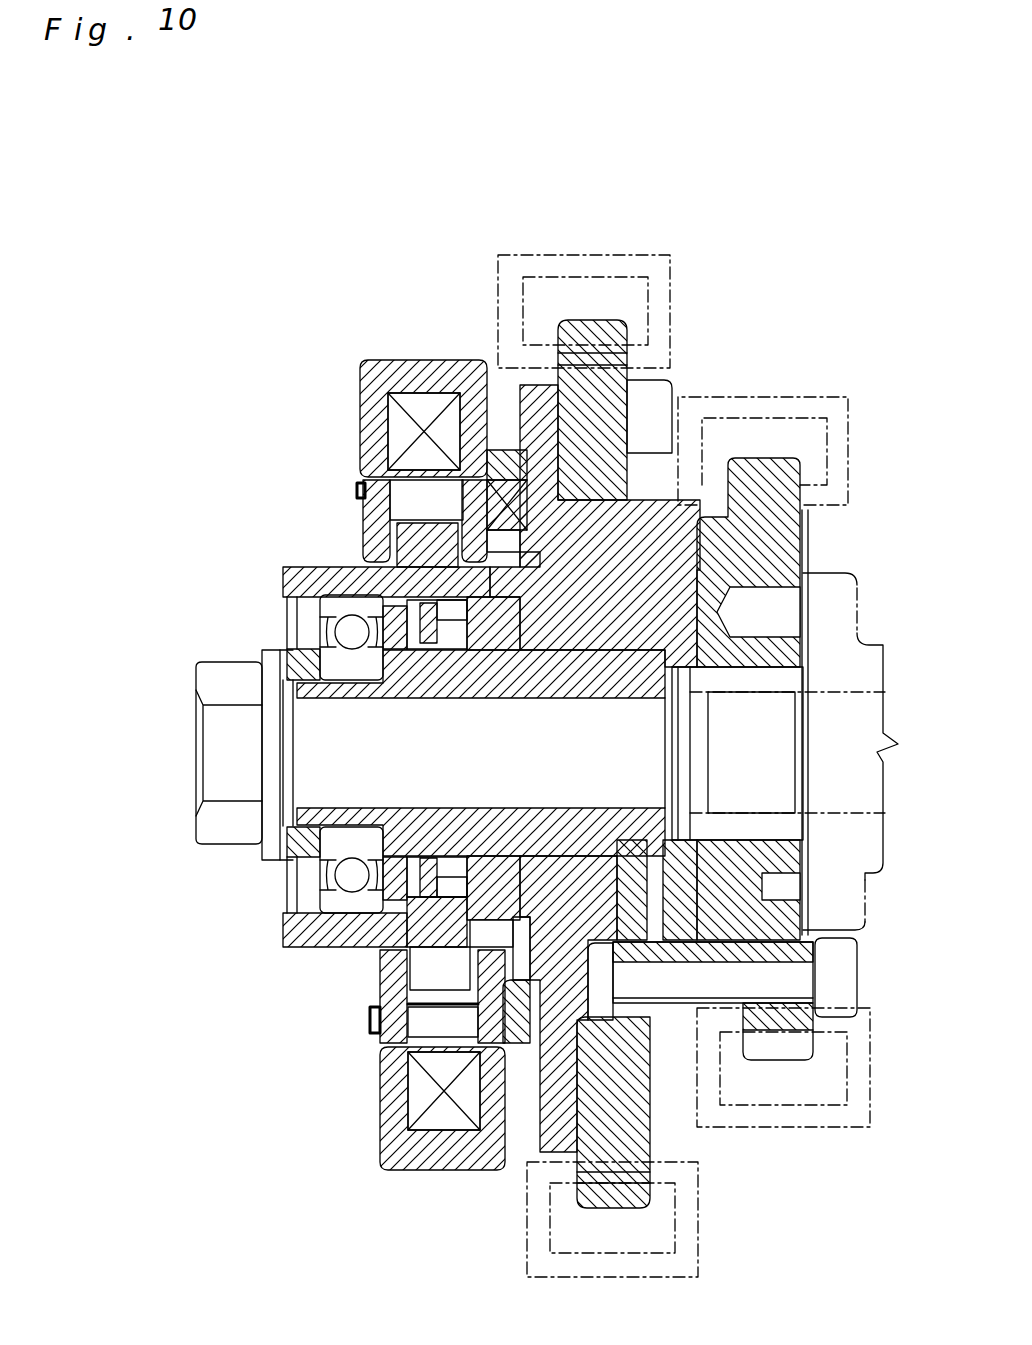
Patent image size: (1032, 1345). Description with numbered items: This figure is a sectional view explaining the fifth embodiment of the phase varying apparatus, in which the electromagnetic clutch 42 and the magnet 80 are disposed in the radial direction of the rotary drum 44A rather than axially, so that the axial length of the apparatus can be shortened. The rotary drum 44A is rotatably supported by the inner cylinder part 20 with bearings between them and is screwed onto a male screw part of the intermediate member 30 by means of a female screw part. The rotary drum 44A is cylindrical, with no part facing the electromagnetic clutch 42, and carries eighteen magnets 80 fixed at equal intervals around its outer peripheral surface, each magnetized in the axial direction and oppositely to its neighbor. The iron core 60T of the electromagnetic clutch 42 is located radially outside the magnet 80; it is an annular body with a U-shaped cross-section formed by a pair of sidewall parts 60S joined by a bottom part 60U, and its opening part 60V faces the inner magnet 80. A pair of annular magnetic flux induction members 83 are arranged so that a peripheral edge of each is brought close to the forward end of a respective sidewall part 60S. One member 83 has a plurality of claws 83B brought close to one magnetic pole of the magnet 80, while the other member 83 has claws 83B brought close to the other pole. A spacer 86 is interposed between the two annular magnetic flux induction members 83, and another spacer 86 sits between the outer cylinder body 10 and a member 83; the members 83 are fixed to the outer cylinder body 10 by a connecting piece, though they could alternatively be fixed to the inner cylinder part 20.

The outer cylinder body 10 is at (585, 317).
The inner cylinder part 20 is at (427, 673).
The intermediate member 30 is at (515, 630).
The electromagnetic clutch 42 is at (290, 450).
The rotary drum 44A is at (297, 578).
The iron core 60T is at (482, 252).
The sidewall parts 60S is at (360, 418).
The opening part 60V is at (393, 405).
The bottom part 60U is at (417, 360).
The magnet 80 is at (390, 595).
The annular magnetic flux induction member 83 is at (357, 490).
The claw 83B is at (365, 537).
The spacer 86 is at (510, 470).